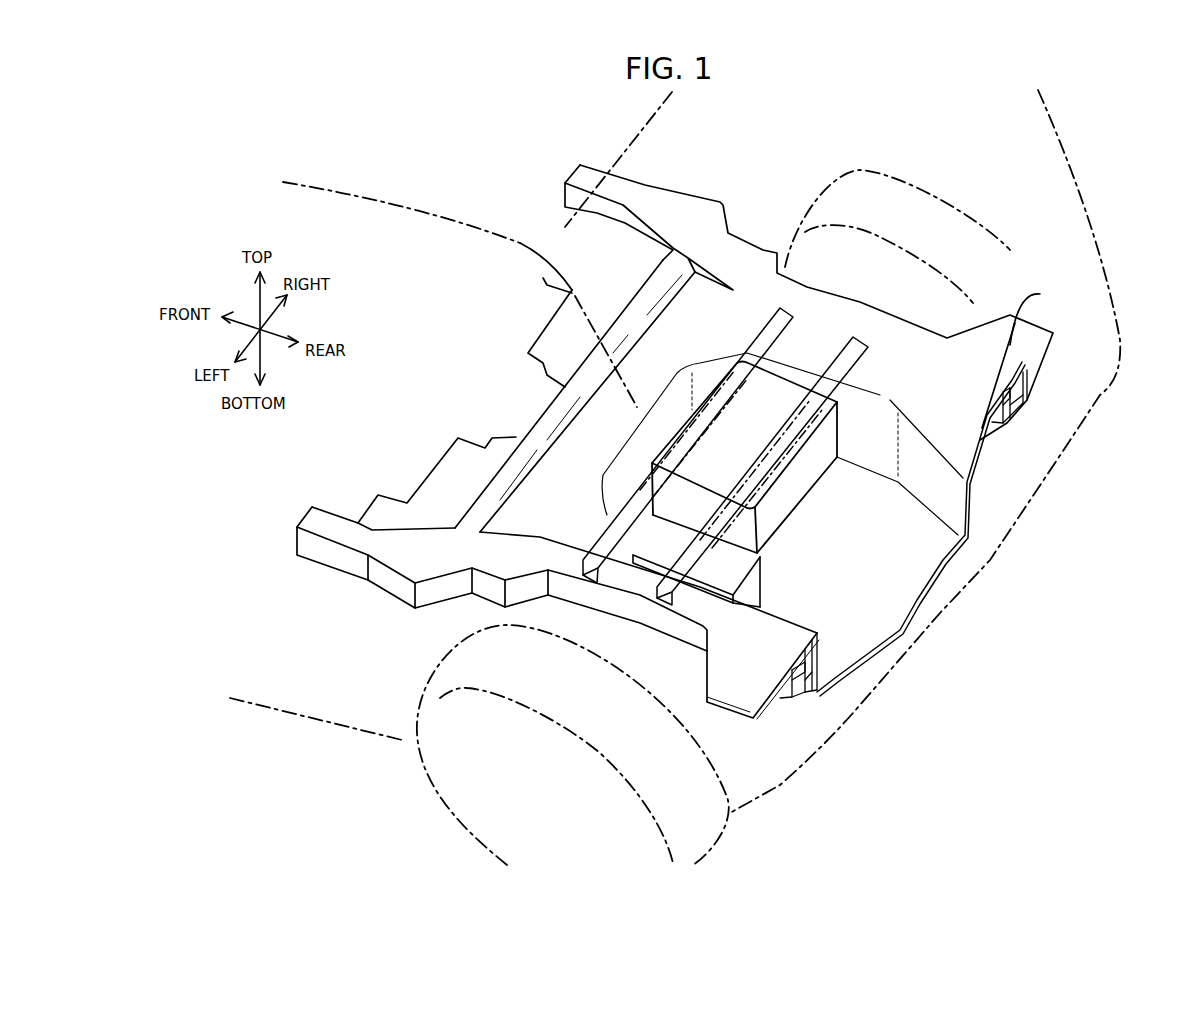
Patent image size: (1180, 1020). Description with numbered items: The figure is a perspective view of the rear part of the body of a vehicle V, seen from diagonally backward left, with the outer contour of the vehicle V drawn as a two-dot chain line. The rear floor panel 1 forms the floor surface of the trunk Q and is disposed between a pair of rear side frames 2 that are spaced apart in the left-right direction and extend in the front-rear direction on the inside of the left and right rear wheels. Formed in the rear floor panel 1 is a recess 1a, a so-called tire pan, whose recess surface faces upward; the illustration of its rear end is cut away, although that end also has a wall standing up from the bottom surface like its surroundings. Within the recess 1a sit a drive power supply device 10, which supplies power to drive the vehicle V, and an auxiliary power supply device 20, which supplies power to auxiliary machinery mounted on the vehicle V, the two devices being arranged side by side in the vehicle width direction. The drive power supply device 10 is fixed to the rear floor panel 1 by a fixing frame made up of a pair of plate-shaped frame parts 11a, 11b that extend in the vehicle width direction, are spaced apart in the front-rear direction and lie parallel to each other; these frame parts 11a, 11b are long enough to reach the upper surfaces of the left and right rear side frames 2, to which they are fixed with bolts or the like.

The rear floor panel 1 is at (1040, 294).
The recess 1a is at (887, 573).
The rear side frame 2 is at (1020, 408).
The drive power supply device 10 is at (800, 478).
The frame part 11a is at (786, 312).
The frame part 11b is at (862, 338).
The auxiliary power supply device 20 is at (750, 592).
The vehicle V is at (1067, 150).
The trunk Q is at (930, 384).